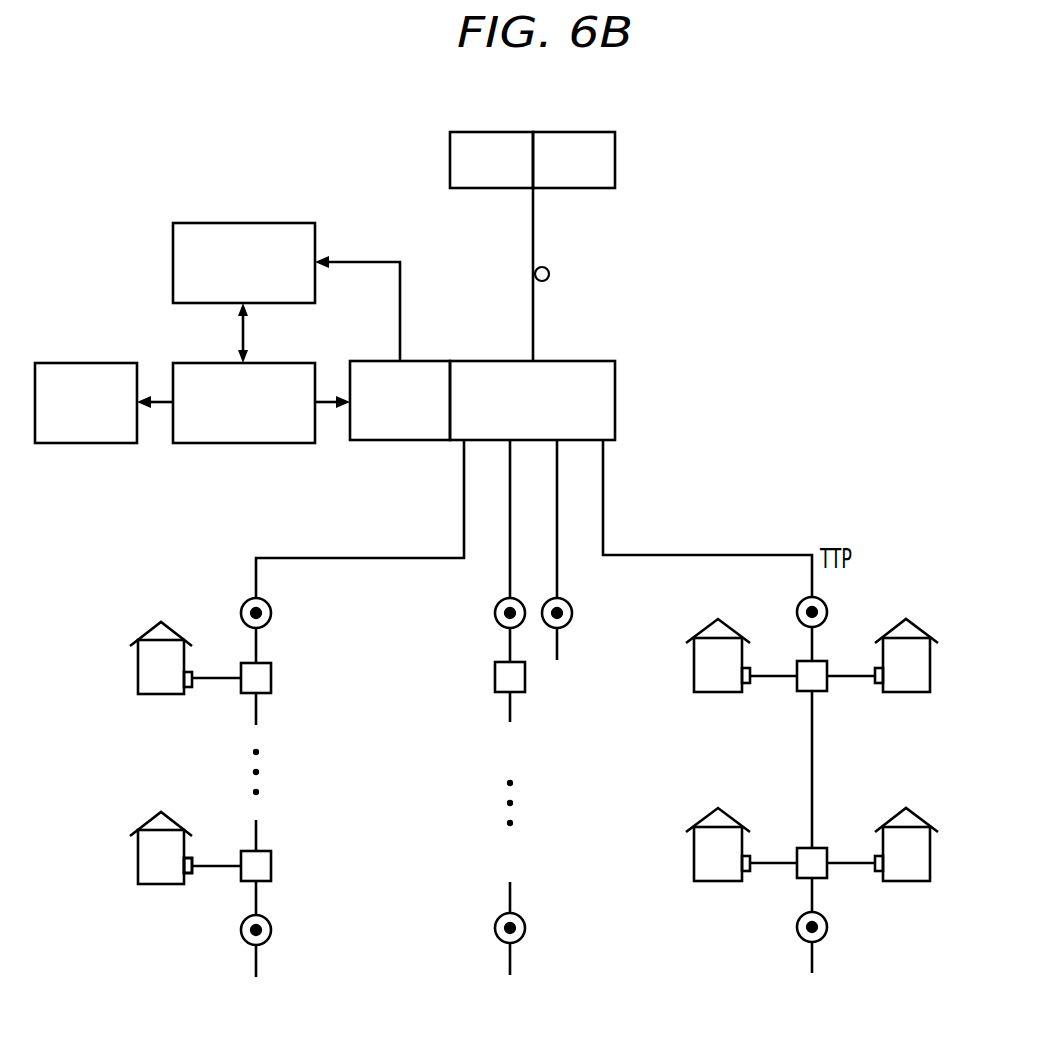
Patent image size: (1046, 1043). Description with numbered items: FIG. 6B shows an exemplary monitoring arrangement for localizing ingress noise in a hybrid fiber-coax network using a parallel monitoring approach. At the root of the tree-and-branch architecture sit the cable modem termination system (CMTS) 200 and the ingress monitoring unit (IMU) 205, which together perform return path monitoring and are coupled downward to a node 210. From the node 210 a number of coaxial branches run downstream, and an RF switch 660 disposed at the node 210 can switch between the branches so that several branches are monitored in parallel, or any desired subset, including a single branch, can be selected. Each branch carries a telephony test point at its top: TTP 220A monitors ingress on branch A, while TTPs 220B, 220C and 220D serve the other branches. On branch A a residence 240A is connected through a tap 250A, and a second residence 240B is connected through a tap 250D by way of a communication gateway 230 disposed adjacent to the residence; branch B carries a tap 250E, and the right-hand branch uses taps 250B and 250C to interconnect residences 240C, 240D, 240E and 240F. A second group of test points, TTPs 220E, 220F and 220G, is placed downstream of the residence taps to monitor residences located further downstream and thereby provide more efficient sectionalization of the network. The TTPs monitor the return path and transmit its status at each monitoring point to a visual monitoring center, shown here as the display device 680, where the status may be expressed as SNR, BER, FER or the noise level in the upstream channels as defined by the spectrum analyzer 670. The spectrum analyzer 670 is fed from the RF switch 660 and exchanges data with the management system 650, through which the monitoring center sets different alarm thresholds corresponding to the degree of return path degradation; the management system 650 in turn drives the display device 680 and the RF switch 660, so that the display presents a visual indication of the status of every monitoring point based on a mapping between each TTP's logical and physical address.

The cable modem termination system 200 is at (615, 160).
The ingress monitoring unit 205 is at (449, 158).
The node 210 is at (615, 409).
The telephony test point 220A is at (272, 613).
The telephony test point 220B is at (494, 613).
The telephony test point 220C is at (573, 613).
The telephony test point 220D is at (826, 607).
The telephony test point 220E is at (272, 930).
The telephony test point 220F is at (494, 928).
The telephony test point 220G is at (799, 922).
The communication gateway 230 is at (194, 884).
The residence 240A is at (138, 667).
The residence 240B is at (138, 855).
The residence 240C is at (694, 665).
The residence 240D is at (908, 693).
The residence 240E is at (694, 854).
The residence 240F is at (908, 882).
The tap 250A is at (272, 678).
The tap 250B is at (796, 692).
The tap 250C is at (796, 879).
The tap 250D is at (272, 866).
The tap 250E is at (494, 678).
The management system 650 is at (278, 363).
The RF switch 660 is at (415, 361).
The spectrum analyzer 670 is at (231, 223).
The display device 680 is at (70, 363).